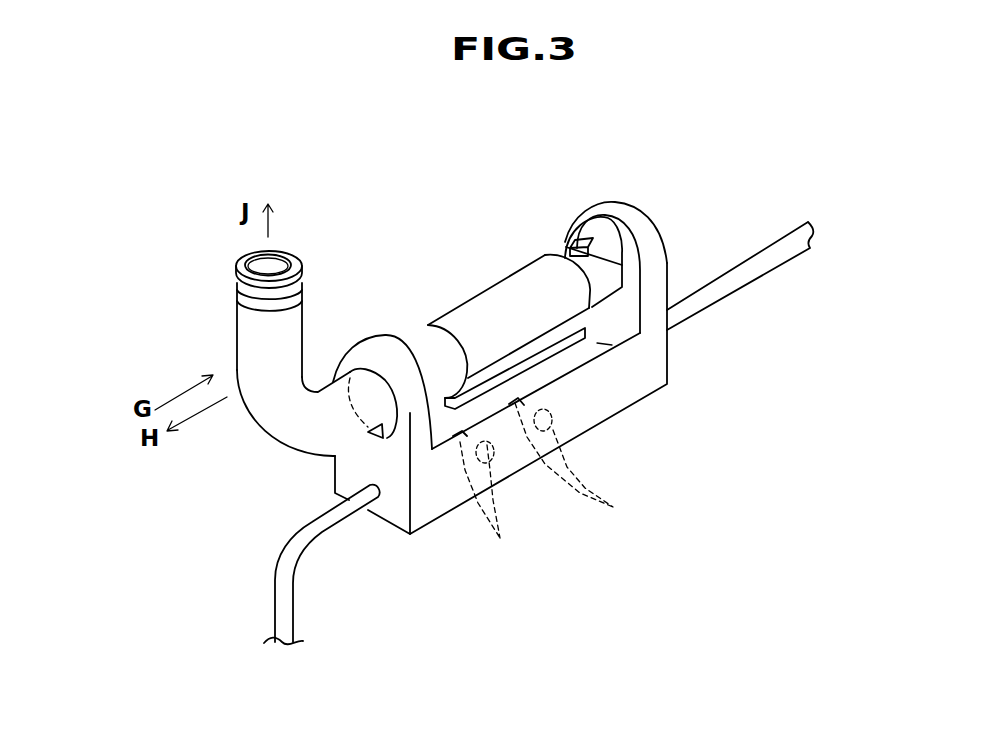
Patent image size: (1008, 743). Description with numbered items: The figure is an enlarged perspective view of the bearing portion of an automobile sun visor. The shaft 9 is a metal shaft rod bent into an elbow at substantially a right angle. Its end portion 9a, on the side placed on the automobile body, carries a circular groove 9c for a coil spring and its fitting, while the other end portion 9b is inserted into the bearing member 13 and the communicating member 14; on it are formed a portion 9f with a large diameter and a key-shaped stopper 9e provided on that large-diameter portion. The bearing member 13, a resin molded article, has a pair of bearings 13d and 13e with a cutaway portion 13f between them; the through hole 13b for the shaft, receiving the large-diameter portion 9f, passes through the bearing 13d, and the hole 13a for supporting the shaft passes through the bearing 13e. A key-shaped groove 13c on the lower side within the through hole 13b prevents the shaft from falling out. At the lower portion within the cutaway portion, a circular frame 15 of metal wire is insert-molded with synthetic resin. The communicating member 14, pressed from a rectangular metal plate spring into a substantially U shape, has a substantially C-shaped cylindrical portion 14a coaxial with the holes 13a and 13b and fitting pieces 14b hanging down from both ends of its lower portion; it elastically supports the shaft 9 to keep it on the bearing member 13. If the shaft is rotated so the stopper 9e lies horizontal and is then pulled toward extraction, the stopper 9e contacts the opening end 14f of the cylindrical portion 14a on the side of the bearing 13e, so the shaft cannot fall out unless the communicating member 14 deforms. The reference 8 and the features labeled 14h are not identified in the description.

The mounting structure assembly 8 is at (727, 226).
The shaft 9 is at (253, 337).
The end portion 9a is at (237, 321).
The end portion 9b is at (598, 255).
The circular groove 9c is at (247, 298).
The stopper 9e is at (571, 229).
The portion with a large diameter 9f is at (427, 341).
The bearing member 13 is at (507, 457).
The hole for supporting a shaft 13a is at (622, 240).
The through hole for a shaft 13b is at (413, 440).
The key-shaped groove 13c is at (378, 428).
The bearing 13d is at (383, 347).
The bearing 13e is at (628, 222).
The cutaway portion 13f is at (612, 345).
The communicating member 14 is at (470, 305).
The cylindrical portion 14a is at (513, 273).
The fitting piece 14b is at (527, 358).
The opening end 14f is at (597, 343).
The clamp hooks 14h is at (567, 481).
The circular frame 15 is at (723, 290).